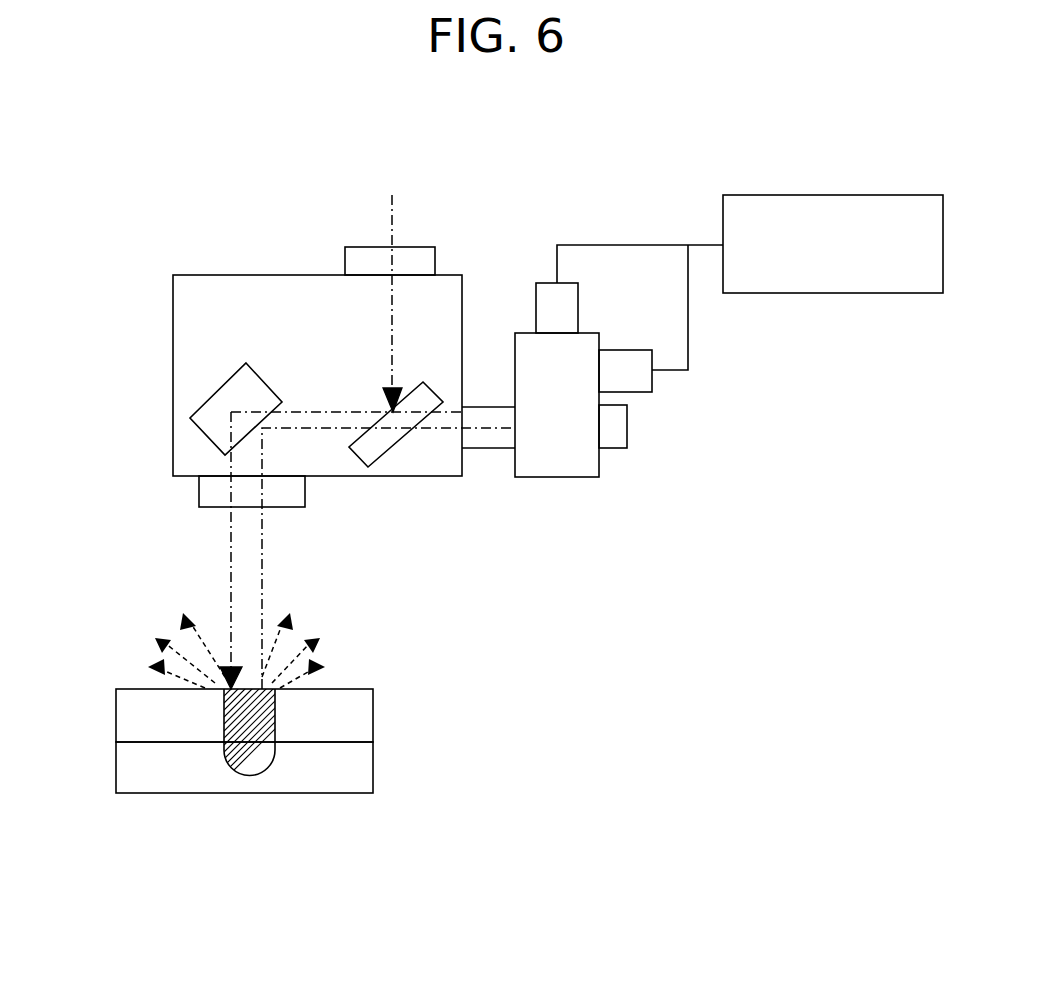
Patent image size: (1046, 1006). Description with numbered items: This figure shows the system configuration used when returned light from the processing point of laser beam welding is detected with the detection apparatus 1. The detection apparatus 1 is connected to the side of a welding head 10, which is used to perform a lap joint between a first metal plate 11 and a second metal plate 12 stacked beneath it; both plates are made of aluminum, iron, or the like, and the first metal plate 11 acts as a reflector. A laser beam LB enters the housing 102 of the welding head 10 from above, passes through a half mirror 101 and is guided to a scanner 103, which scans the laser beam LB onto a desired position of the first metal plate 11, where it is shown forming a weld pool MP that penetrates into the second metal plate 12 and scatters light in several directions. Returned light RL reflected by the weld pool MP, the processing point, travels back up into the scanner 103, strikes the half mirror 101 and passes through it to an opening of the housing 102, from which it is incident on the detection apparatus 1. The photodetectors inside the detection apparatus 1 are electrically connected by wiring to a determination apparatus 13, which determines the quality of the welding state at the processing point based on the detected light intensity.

The detection apparatus 1 is at (560, 478).
The welding head 10 is at (258, 392).
The first metal plate 11 is at (352, 718).
The second metal plate 12 is at (352, 773).
The determination apparatus 13 is at (900, 193).
The half mirror 101 is at (377, 447).
The housing 102 is at (173, 279).
The scanner 103 is at (190, 421).
The laser beam LB is at (390, 225).
The returned light RL is at (265, 540).
The weld pool MP is at (238, 778).